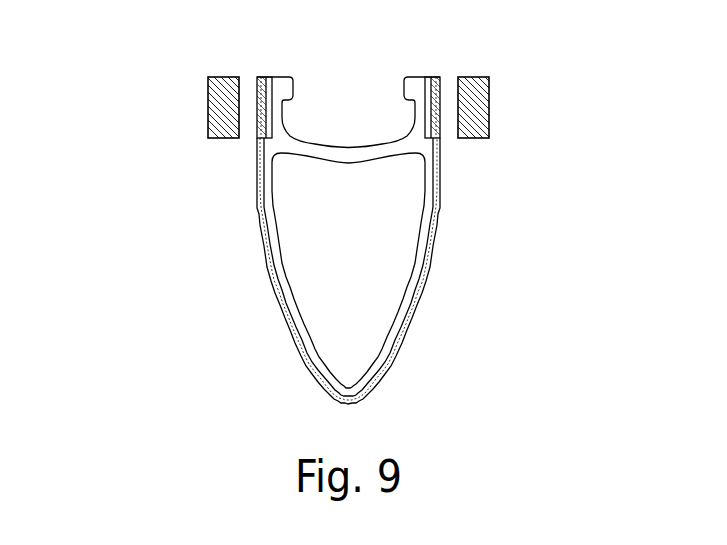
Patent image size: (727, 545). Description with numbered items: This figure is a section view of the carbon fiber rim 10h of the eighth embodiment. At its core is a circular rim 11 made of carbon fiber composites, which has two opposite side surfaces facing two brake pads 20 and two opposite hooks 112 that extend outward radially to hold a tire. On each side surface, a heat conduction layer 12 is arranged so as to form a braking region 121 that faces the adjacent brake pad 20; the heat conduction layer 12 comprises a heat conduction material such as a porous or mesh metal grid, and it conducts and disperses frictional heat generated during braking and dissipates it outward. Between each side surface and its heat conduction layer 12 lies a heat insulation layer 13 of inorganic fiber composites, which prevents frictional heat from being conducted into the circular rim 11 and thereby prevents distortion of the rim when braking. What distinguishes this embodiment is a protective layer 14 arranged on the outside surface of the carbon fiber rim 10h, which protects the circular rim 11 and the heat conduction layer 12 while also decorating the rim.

The carbon fiber rim 10h is at (227, 261).
The circular rim 11 is at (413, 278).
The hook 112 is at (283, 88).
The heat conduction layer 12 is at (256, 137).
The braking region 121 is at (247, 121).
The heat insulation layer 13 is at (256, 77).
The protective layer 14 is at (437, 223).
The brake pad 20 is at (208, 89).